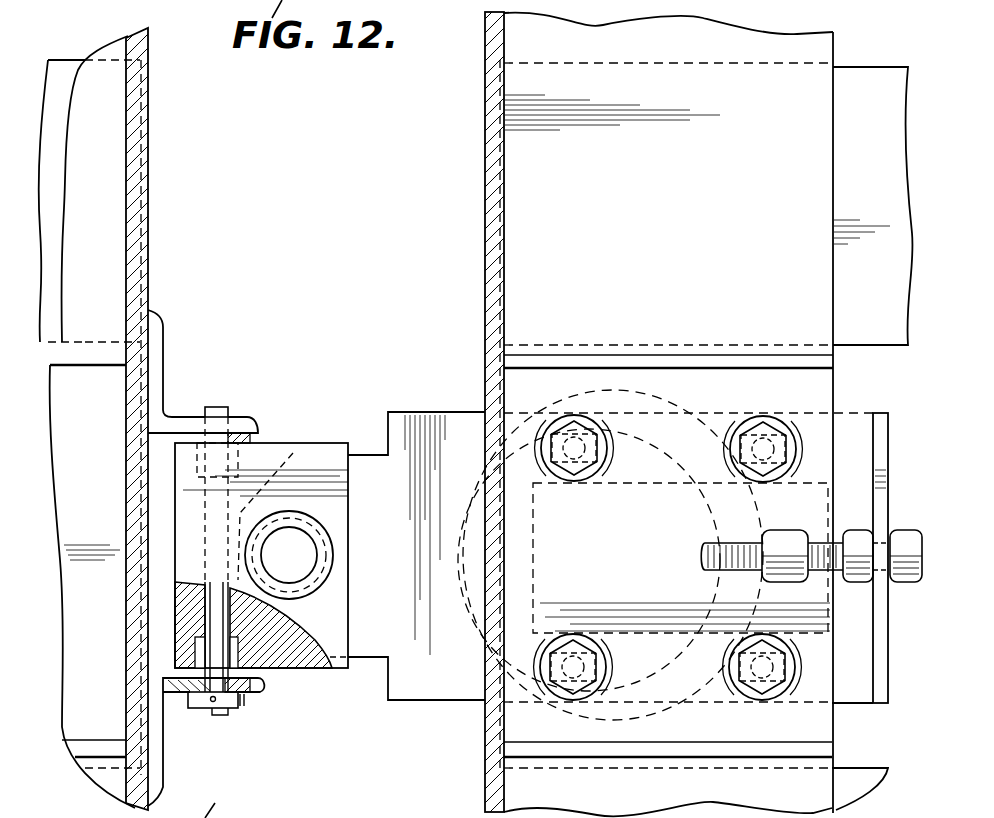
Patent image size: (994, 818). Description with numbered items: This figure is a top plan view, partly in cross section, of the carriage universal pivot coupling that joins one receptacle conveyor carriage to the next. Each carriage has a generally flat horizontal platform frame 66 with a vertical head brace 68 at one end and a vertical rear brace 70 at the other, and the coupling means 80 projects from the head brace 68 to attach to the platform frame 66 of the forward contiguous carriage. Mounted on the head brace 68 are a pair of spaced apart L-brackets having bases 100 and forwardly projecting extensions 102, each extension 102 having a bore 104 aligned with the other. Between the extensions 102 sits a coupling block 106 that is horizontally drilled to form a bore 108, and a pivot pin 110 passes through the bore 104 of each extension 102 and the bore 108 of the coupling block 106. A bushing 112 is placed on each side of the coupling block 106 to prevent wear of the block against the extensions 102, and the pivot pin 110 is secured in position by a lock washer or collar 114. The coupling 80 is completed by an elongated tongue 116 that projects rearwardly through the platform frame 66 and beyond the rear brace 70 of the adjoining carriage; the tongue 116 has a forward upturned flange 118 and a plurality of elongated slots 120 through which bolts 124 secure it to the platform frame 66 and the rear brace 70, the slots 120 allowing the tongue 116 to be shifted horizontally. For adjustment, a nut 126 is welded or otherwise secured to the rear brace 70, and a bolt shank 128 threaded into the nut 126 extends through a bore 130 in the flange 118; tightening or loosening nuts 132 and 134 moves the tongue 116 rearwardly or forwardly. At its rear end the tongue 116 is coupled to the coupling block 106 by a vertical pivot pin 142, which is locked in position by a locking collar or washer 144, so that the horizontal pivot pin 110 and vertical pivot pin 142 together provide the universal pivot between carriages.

The platform frame 66 is at (72, 72).
The vertical head brace 68 is at (142, 253).
The vertical rear brace 70 is at (485, 300).
The coupling means 80 is at (306, 302).
The L-bracket base 100 is at (158, 348).
The forwardly projecting extension 102 is at (177, 423).
The bore 104 is at (212, 710).
The coupling block 106 is at (313, 463).
The bore 108 is at (205, 619).
The pivot pin 110 is at (246, 623).
The bushing 112 is at (250, 440).
The lock washer or collar 114 is at (245, 700).
The elongated tongue 116 is at (610, 523).
The forward upturned flange 118 is at (878, 422).
The elongated slot 120 is at (645, 396).
The bolt 124 is at (566, 480).
The nut 126 is at (776, 541).
The bolt shank 128 is at (702, 547).
The bore 130 is at (884, 548).
The nut 132 is at (856, 576).
The nut 134 is at (892, 574).
The vertical pivot pin 142 is at (306, 566).
The locking collar or washer 144 is at (314, 531).